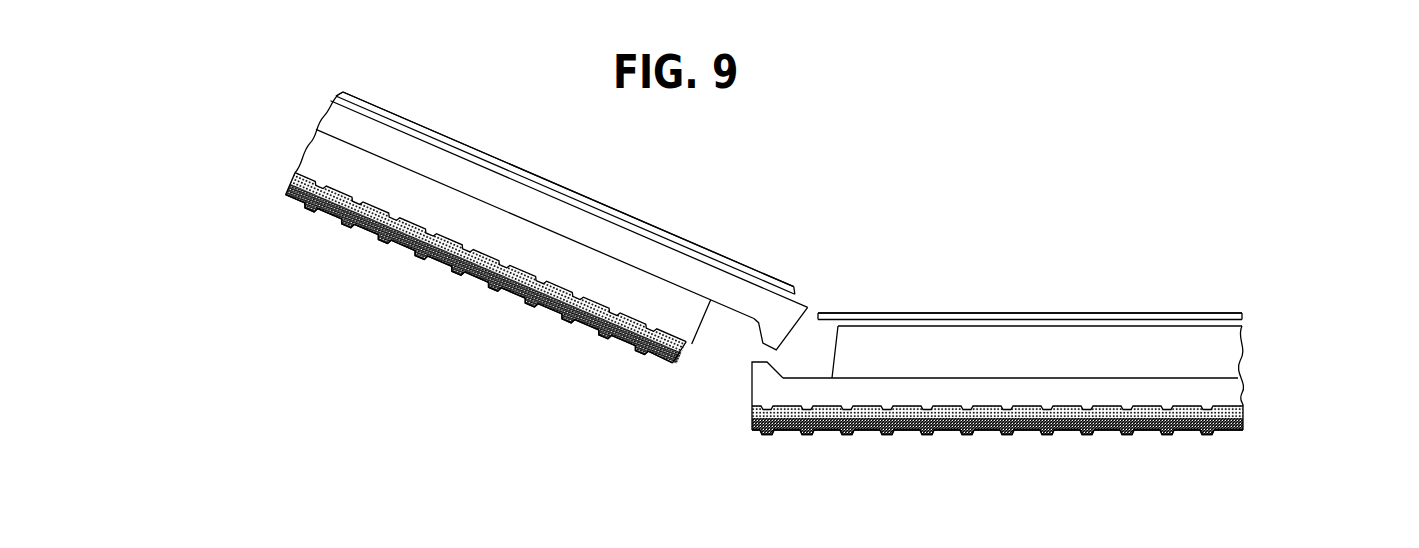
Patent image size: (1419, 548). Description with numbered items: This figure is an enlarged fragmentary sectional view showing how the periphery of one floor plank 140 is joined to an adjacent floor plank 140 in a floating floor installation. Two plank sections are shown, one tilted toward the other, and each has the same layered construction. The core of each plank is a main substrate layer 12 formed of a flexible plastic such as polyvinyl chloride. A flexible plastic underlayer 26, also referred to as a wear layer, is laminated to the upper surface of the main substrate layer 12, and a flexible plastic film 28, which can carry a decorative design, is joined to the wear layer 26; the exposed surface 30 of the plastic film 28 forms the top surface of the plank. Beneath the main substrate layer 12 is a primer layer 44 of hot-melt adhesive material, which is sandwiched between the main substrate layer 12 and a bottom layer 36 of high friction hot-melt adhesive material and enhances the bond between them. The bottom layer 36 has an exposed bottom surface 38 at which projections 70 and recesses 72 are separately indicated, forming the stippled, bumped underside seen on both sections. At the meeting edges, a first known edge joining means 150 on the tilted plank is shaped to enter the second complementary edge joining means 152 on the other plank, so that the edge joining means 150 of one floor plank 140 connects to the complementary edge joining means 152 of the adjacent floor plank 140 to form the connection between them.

The main substrate layer 12 is at (317, 148).
The flexible plastic underlayer 26 is at (333, 100).
The flexible plastic film 28 is at (340, 93).
The exposed surface 30 is at (650, 221).
The bottom layer 36 is at (293, 185).
The exposed bottom surface 38 is at (585, 328).
The primer layer 44 is at (300, 173).
The projections 70 is at (383, 235).
The recesses 72 is at (515, 293).
The floor plank 140 is at (780, 259).
The first edge joining means 150 is at (799, 332).
The second complementary edge joining means 152 is at (741, 388).